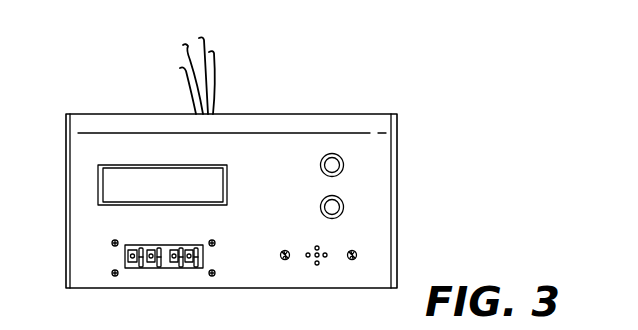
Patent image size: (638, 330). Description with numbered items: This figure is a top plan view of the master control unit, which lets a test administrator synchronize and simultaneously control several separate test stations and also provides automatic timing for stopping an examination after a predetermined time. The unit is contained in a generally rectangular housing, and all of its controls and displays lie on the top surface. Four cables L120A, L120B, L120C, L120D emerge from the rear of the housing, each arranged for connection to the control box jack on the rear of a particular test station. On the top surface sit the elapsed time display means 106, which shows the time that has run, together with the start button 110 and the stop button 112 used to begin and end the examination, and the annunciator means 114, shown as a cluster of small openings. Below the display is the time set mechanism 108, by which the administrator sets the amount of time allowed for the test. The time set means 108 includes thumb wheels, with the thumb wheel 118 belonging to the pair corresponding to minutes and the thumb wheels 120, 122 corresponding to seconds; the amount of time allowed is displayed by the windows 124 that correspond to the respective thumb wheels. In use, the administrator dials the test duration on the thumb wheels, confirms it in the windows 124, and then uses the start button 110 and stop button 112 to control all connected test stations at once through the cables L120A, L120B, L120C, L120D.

The elapsed time display means 106 is at (100, 182).
The time set mechanism 108 is at (128, 256).
The start button 110 is at (344, 165).
The stop button 112 is at (344, 207).
The annunciator means 114 is at (310, 260).
The thumb wheel 118 is at (128, 266).
The thumb wheel 120 is at (158, 249).
The thumb wheel 122 is at (213, 265).
The windows 124 is at (203, 260).
The cable L120A is at (184, 72).
The cable L120B is at (191, 88).
The cable L120C is at (206, 45).
The cable L120D is at (217, 88).